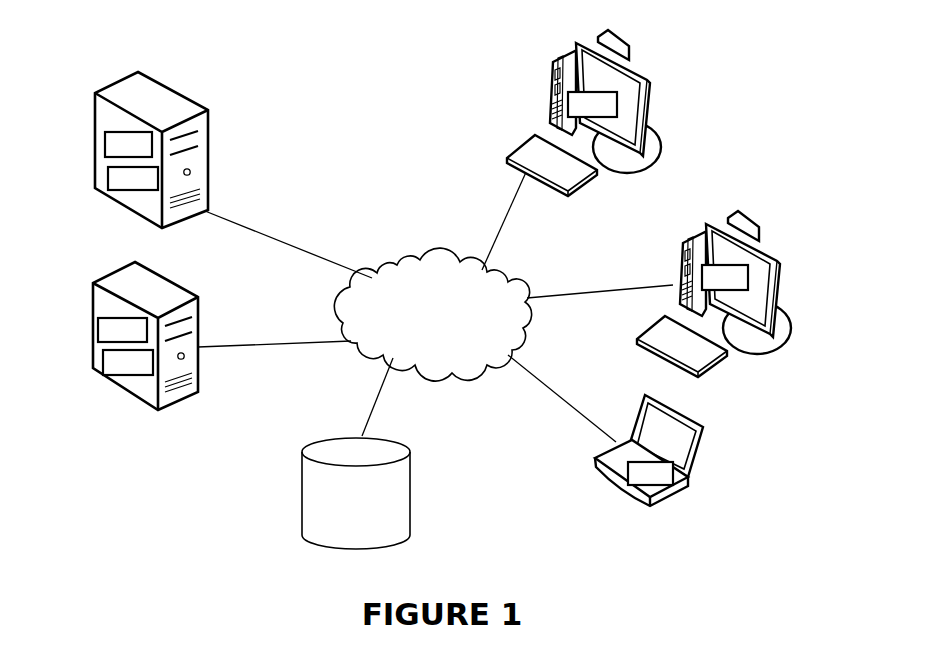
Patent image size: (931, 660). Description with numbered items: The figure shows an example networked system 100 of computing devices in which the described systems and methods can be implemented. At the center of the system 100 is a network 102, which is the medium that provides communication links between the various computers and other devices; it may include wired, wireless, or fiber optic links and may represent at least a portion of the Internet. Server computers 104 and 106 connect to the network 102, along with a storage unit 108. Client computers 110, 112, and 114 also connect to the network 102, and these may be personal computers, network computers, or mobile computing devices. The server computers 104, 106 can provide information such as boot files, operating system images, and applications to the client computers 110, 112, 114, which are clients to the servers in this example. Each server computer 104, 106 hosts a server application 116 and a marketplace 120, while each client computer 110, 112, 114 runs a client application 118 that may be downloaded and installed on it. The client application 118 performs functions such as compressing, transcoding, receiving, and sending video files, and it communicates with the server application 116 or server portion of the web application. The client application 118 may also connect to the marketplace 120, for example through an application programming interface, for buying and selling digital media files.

The networked system 100 is at (297, 49).
The network 102 is at (432, 314).
The server computer 104 is at (151, 154).
The server computer 106 is at (145, 339).
The storage unit 108 is at (356, 493).
The client computer 110 is at (584, 113).
The client computer 112 is at (714, 294).
The client computer 114 is at (650, 456).
The server application 116 is at (125, 237).
The client application 118 is at (658, 288).
The marketplace 120 is at (130, 271).